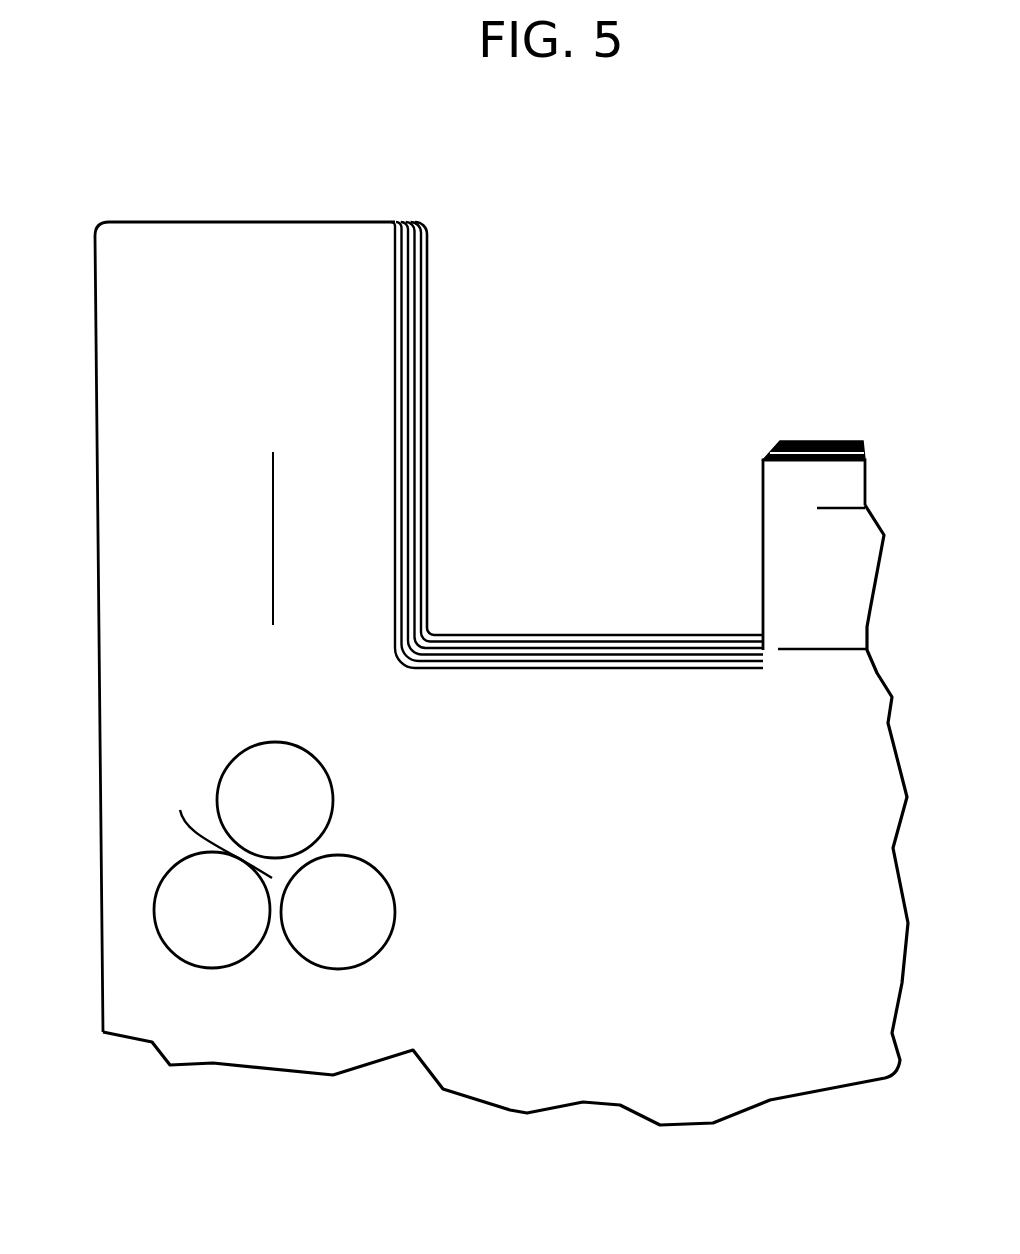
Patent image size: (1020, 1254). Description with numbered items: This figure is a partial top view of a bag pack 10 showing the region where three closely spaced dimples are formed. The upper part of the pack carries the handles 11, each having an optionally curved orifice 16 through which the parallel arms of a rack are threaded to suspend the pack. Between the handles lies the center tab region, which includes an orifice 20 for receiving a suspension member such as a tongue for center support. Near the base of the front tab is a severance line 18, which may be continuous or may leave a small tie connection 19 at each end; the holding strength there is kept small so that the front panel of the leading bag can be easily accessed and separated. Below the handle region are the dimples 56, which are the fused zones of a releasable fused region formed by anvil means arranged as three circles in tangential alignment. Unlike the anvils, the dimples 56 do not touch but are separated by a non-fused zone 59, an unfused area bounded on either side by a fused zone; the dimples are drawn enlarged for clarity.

The bag pack 10 is at (450, 392).
The handles 11 is at (98, 523).
The orifices 16 is at (273, 508).
The severance line 18 is at (805, 650).
The tie connection 19 is at (770, 650).
The orifice 20 is at (852, 509).
The dimples 56 is at (312, 755).
The non-fused zone 59 is at (216, 826).